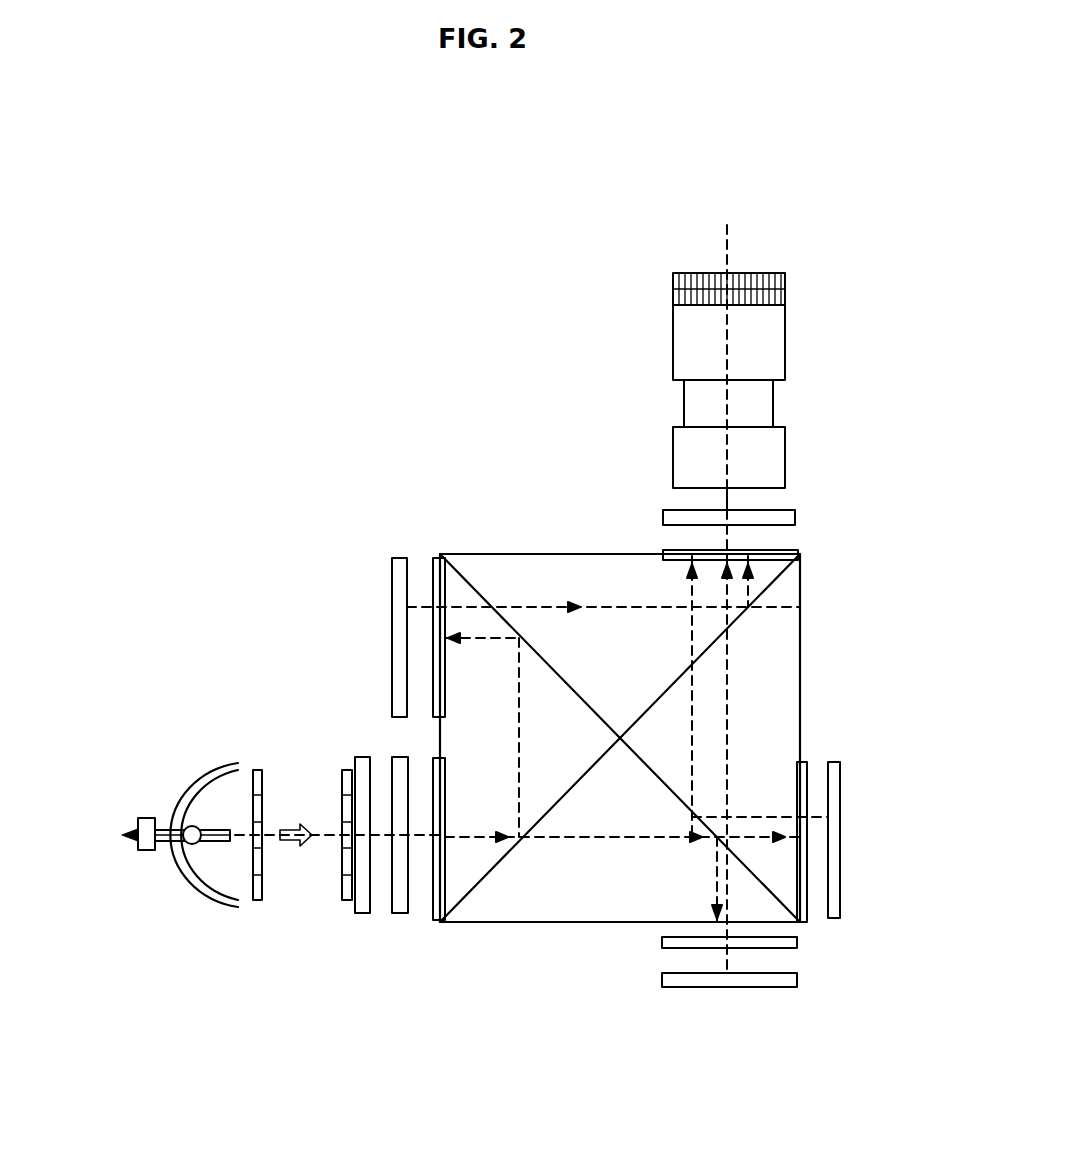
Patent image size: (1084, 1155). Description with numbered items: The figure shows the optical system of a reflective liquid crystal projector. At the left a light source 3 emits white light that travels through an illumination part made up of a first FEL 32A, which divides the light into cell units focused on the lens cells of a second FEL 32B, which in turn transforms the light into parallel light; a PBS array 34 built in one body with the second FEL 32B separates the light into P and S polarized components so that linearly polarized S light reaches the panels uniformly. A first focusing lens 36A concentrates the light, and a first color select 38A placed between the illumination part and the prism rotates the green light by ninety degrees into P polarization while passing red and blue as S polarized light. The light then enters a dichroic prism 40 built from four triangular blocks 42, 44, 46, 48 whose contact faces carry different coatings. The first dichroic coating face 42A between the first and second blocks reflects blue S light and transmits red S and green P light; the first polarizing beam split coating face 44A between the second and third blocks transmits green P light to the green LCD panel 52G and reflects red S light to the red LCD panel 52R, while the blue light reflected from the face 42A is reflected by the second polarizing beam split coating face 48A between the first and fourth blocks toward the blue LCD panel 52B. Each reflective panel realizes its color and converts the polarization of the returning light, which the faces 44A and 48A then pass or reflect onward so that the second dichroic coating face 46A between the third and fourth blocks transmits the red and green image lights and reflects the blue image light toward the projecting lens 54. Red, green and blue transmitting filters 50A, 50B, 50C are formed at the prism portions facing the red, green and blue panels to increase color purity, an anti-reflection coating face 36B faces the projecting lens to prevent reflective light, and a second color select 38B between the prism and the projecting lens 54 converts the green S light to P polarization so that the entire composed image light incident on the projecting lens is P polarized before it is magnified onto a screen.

The light source lamp 3 is at (145, 890).
The first FEL 32A is at (258, 900).
The second FEL 32B is at (345, 780).
The PBS array 34 is at (362, 913).
The first color select 38A is at (400, 913).
The first focusing lens 36A is at (440, 920).
The dichroic prism 40 is at (528, 518).
The first block 42 is at (496, 735).
The second block 44 is at (630, 894).
The third block 46 is at (788, 736).
The fourth block 48 is at (633, 700).
The first dichroic coating face 42A is at (575, 779).
The first polarizing beam split coating face 44A is at (642, 765).
The second dichroic coating face 46A is at (667, 688).
The second polarizing beam split coating face 48A is at (480, 588).
The red transmitting filter 50A is at (662, 940).
The green transmitting filter 50B is at (802, 920).
The blue transmitting filter 50C is at (436, 565).
The blue LCD panel 52B is at (400, 600).
The green LCD panel 52G is at (840, 805).
The red LCD panel 52R is at (757, 987).
The anti-reflection coating face 36B is at (740, 548).
The second color select 38B is at (795, 518).
The projecting lens 54 is at (785, 335).